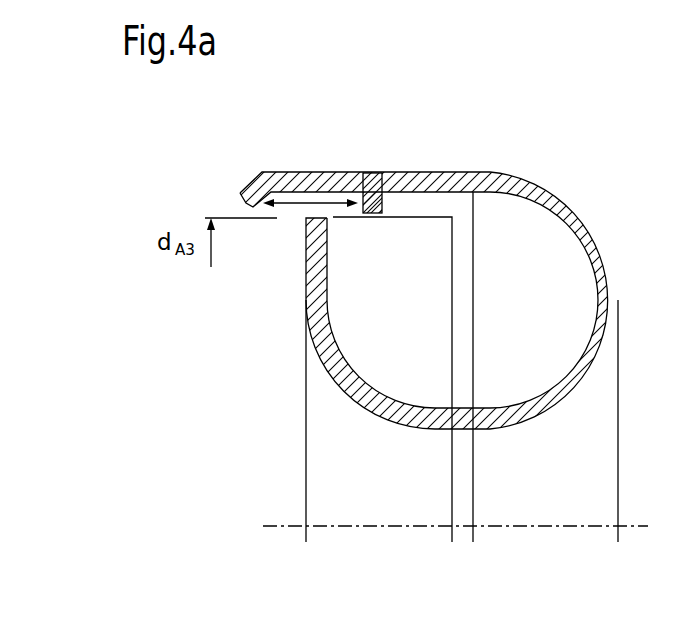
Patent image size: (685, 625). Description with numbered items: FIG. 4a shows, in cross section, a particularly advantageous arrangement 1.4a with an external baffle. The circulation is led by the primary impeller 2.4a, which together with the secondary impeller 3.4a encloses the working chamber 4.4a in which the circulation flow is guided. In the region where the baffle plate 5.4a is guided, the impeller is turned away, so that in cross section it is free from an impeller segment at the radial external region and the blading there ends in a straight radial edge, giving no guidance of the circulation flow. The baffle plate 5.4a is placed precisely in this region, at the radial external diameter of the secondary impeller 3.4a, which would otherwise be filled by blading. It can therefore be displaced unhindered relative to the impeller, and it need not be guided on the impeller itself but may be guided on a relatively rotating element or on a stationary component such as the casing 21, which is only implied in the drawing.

The arrangement 1.4a is at (489, 114).
The casing 21 is at (440, 173).
The primary impeller 2.4a is at (567, 207).
The secondary impeller 3.4a is at (316, 289).
The working chamber 4.4a is at (556, 315).
The baffle plate 5.4a is at (372, 173).